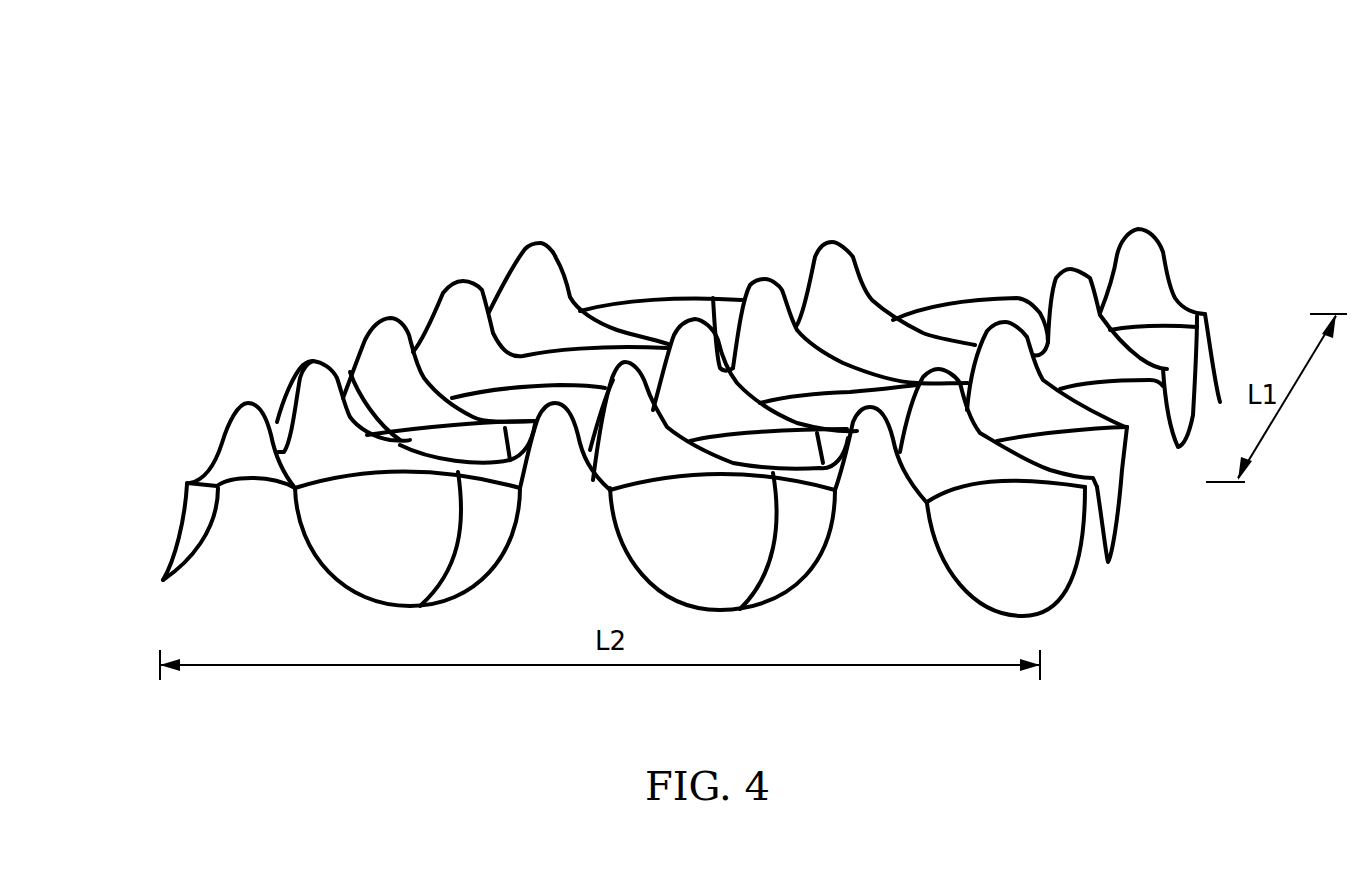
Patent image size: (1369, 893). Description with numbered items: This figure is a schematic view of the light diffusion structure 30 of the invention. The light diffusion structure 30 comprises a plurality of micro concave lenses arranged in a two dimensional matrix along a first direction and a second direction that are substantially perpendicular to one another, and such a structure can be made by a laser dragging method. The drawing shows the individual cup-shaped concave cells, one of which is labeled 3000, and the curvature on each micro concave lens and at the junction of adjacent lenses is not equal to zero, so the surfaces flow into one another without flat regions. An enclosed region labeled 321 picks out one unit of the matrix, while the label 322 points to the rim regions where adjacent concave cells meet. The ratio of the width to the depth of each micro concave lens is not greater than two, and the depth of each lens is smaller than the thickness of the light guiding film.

The light diffusion structure 30 is at (110, 36).
The cup-shaped cell 3000 is at (327, 472).
The unit cell 321 is at (578, 386).
The rim 322 is at (395, 523).